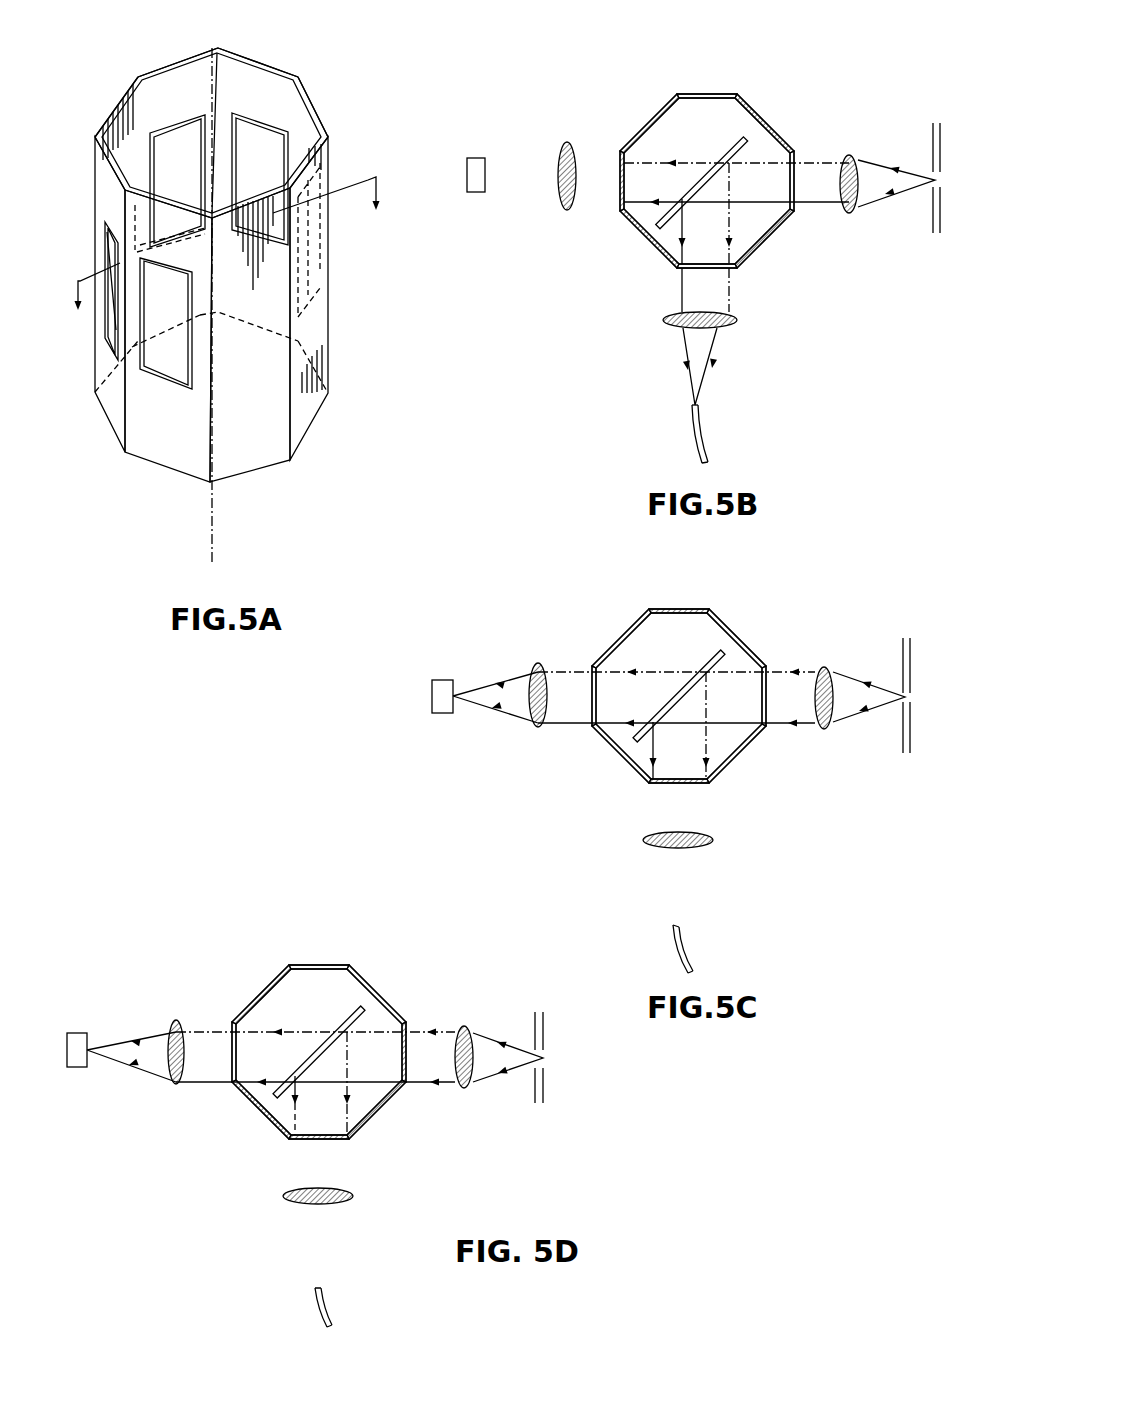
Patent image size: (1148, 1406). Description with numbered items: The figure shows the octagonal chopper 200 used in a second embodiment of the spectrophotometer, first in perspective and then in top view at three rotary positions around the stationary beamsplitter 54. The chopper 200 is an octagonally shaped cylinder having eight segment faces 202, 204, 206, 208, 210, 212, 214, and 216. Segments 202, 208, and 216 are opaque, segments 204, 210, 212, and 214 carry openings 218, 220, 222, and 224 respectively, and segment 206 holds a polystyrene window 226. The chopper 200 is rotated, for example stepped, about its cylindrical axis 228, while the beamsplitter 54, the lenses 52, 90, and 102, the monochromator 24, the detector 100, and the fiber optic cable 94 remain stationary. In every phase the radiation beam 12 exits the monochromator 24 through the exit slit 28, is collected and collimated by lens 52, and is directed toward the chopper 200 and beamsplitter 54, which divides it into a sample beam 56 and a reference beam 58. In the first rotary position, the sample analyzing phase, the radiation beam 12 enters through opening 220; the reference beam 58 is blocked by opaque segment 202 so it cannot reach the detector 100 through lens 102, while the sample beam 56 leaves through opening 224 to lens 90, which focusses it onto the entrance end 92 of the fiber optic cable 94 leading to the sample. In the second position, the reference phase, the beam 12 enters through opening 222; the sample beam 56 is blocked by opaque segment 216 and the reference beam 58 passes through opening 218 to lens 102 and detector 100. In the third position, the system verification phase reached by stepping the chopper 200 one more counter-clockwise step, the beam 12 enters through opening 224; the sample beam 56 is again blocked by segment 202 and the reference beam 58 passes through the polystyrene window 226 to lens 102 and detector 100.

In FIG. 5B, the radiation beam 12 is at (896, 202).
In FIG. 5C, the radiation beam 12 is at (869, 715).
In FIG. 5D, the radiation beam 12 is at (508, 1046).
In FIG. 5B, the monochromator 24 is at (907, 207).
In FIG. 5C, the monochromator 24 is at (884, 710).
In FIG. 5D, the monochromator 24 is at (526, 1085).
In FIG. 5B, the exit slit 28 is at (914, 150).
In FIG. 5C, the exit slit 28 is at (884, 675).
In FIG. 5D, the exit slit 28 is at (522, 1081).
In FIG. 5B, the lens 52 is at (859, 169).
In FIG. 5C, the lens 52 is at (813, 719).
In FIG. 5D, the lens 52 is at (467, 1034).
In FIG. 5B, the beamsplitter 54 is at (702, 169).
In FIG. 5C, the beamsplitter 54 is at (679, 683).
In FIG. 5D, the beamsplitter 54 is at (319, 1043).
In FIG. 5B, the sample beam 56 is at (723, 213).
In FIG. 5C, the sample beam 56 is at (698, 725).
In FIG. 5D, the sample beam 56 is at (321, 1083).
In FIG. 5B, the reference beam 58 is at (736, 183).
In FIG. 5C, the reference beam 58 is at (676, 679).
In FIG. 5D, the reference beam 58 is at (315, 1037).
In FIG. 5B, the lens 90 is at (716, 336).
In FIG. 5C, the lens 90 is at (695, 851).
In FIG. 5D, the lens 90 is at (230, 1130).
In FIG. 5B, the entrance end 92 is at (720, 401).
In FIG. 5C, the entrance end 92 is at (700, 908).
In FIG. 5B, the fiber optic cable 94 is at (720, 434).
In FIG. 5C, the fiber optic cable 94 is at (707, 949).
In FIG. 5D, the fiber optic cable 94 is at (350, 1295).
In FIG. 5B, the detector 100 is at (494, 156).
In FIG. 5C, the detector 100 is at (485, 717).
In FIG. 5B, the lens 102 is at (554, 153).
In FIG. 5C, the lens 102 is at (522, 732).
In FIG. 5D, the lens 102 is at (165, 1072).
In FIG. 5A, the octagonal chopper 200 is at (345, 280).
In FIG. 5B, the octagonal chopper 200 is at (707, 141).
In FIG. 5C, the octagonal chopper 200 is at (679, 658).
In FIG. 5D, the octagonal chopper 200 is at (319, 1008).
In FIG. 5A, the segment face 202 is at (260, 467).
In FIG. 5B, the segment face 202 is at (632, 209).
In FIG. 5D, the segment face 202 is at (347, 1132).
In FIG. 5A, the segment face 204 is at (175, 475).
In FIG. 5A, the segment face 206 is at (108, 427).
In FIG. 5A, the segment face 208 is at (117, 102).
In FIG. 5A, the segment face 210 is at (155, 65).
In FIG. 5A, the segment face 212 is at (253, 60).
In FIG. 5A, the segment face 214 is at (328, 125).
In FIG. 5A, the segment face 216 is at (317, 410).
In FIG. 5C, the segment face 216 is at (654, 809).
In FIG. 5A, the opening 218 is at (170, 363).
In FIG. 5B, the opening 218 is at (648, 110).
In FIG. 5C, the opening 218 is at (597, 724).
In FIG. 5D, the opening 218 is at (244, 1067).
In FIG. 5A, the opening 220 is at (193, 125).
In FIG. 5B, the opening 220 is at (793, 152).
In FIG. 5C, the opening 220 is at (747, 632).
In FIG. 5D, the opening 220 is at (324, 949).
In FIG. 5A, the opening 222 is at (260, 138).
In FIG. 5B, the opening 222 is at (773, 248).
In FIG. 5C, the opening 222 is at (790, 679).
In FIG. 5D, the opening 222 is at (386, 993).
In FIG. 5A, the opening 224 is at (335, 200).
In FIG. 5B, the opening 224 is at (686, 289).
In FIG. 5C, the opening 224 is at (744, 762).
In FIG. 5D, the opening 224 is at (427, 1074).
In FIG. 5A, the polystyrene window 226 is at (110, 298).
In FIG. 5B, the polystyrene window 226 is at (731, 73).
In FIG. 5C, the polystyrene window 226 is at (648, 626).
In FIG. 5D, the polystyrene window 226 is at (199, 1033).
In FIG. 5A, the cylindrical axis 228 is at (213, 543).